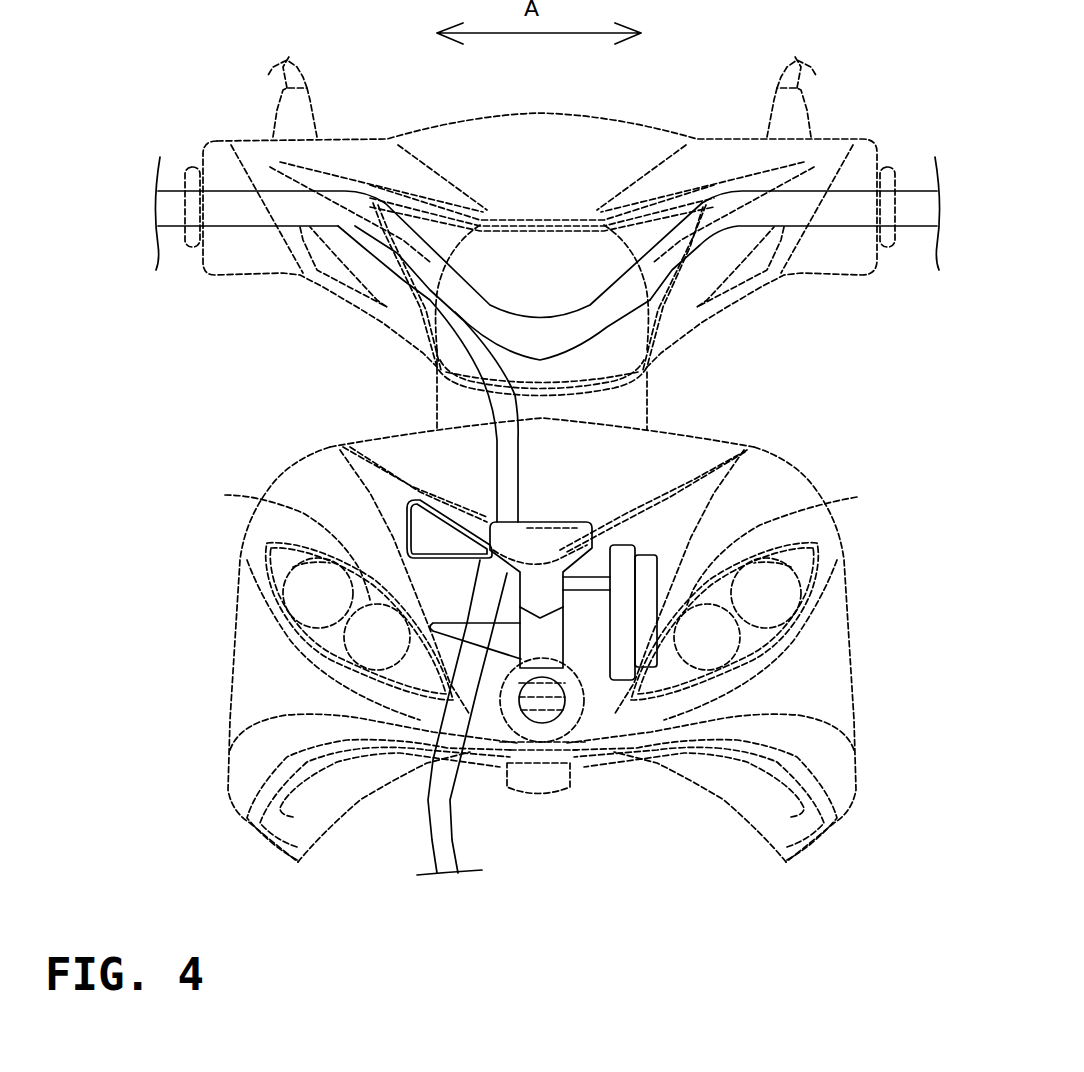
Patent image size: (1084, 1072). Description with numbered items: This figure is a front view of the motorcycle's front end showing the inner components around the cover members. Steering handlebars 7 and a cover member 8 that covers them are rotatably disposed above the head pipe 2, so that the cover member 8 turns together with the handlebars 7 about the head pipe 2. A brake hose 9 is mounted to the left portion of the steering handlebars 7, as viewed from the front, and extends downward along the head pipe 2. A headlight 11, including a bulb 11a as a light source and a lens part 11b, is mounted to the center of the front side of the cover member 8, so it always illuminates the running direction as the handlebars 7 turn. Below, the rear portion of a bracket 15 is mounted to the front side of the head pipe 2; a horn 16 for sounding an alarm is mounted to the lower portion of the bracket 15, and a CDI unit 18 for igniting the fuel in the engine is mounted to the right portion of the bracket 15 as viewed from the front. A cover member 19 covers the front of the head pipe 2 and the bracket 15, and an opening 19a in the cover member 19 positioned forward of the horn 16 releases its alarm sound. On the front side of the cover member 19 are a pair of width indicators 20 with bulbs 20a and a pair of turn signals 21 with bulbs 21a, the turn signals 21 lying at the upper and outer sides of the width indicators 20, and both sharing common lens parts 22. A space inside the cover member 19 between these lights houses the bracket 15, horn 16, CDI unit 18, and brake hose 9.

The head pipe 2 is at (548, 778).
The steering handlebars 7 is at (920, 200).
The cover member 8 is at (593, 135).
The brake hose 9 is at (467, 347).
The headlight 11 is at (686, 320).
The bulb 11a is at (652, 300).
The lens part 11b is at (441, 230).
The bracket 15 is at (567, 535).
The horn 16 is at (507, 727).
The CDI unit 18 is at (655, 585).
The cover member 19 is at (425, 455).
The opening 19a is at (590, 737).
The width indicators 20 is at (360, 637).
The bulbs 20a is at (543, 542).
The turn signals 21 is at (300, 585).
The bulbs 21a is at (293, 567).
The common lens parts 22 is at (272, 608).